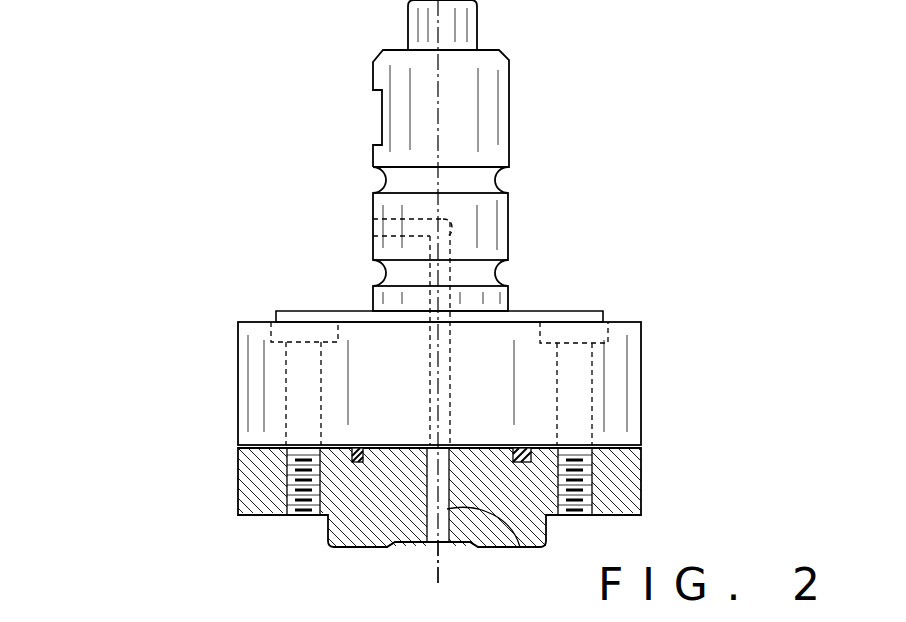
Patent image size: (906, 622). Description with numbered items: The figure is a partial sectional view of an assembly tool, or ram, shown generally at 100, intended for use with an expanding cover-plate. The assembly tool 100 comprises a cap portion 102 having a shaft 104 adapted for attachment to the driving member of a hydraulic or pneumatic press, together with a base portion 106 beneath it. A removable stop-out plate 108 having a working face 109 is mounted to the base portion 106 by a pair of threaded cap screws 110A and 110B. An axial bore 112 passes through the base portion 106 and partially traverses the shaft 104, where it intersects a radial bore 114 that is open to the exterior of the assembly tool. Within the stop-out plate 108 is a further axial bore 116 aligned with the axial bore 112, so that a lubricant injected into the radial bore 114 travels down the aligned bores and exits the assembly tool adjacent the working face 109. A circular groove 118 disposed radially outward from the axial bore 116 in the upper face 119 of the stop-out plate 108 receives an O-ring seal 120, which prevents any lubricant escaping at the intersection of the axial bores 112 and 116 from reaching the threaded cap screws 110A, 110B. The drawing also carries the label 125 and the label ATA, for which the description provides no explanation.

The assembly tool 100 is at (183, 297).
The cap portion 102 is at (504, 271).
The shaft 104 is at (511, 113).
The base portion 106 is at (232, 318).
The stop-out plate 108 is at (645, 483).
The working face 109 is at (368, 554).
The threaded cap screw 110A is at (290, 310).
The threaded cap screw 110B is at (577, 306).
The axial bore 112 is at (442, 360).
The radial bore 114 is at (372, 220).
The axial bore 116 is at (520, 548).
The circular groove 118 is at (367, 480).
The upper face 119 is at (263, 456).
The O-ring seal 120 is at (522, 447).
The recess 125 is at (397, 549).
The axis ATA is at (449, 566).